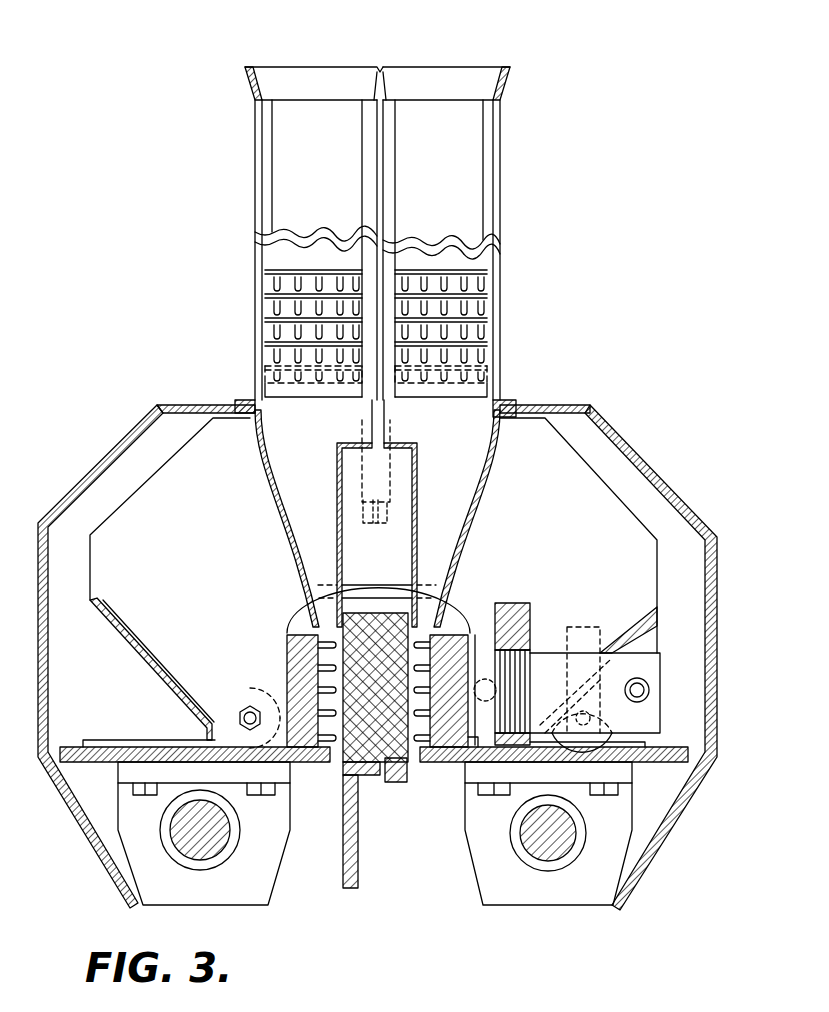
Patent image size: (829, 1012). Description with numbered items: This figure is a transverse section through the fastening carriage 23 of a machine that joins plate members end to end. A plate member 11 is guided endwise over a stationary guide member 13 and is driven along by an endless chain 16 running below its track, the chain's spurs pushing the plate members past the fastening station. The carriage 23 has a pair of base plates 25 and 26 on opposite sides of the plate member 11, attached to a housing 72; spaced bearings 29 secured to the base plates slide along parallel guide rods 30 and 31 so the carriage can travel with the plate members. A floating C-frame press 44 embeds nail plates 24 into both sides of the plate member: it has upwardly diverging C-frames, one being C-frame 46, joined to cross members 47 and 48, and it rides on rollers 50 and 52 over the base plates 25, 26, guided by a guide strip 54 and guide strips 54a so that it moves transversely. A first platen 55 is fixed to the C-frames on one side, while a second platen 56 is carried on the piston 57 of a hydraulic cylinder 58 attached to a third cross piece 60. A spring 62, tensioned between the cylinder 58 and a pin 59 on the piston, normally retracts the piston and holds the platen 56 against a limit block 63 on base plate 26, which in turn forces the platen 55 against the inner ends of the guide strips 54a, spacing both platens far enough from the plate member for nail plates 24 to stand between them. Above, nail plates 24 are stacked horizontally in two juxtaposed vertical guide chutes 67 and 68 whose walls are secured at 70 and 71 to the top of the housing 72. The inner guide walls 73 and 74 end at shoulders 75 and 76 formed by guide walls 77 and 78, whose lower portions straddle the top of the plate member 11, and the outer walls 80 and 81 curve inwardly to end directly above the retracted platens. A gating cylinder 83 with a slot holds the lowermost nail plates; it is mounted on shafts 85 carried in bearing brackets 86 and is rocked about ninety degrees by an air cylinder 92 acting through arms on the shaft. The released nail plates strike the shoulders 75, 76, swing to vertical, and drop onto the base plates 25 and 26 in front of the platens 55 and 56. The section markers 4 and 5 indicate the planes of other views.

The section line 4- 4 is at (397, 8).
The section line 5- 5 is at (673, 530).
The plate member 11 is at (378, 632).
The stationary guide member 13 is at (359, 860).
The endless chain 16 is at (396, 783).
The fastening carriage 23 is at (377, 639).
The nail plates 24 is at (489, 283).
The base plate 25 is at (70, 747).
The base plate 26 is at (662, 765).
The bearings 29 is at (218, 858).
The guide rod 30 is at (183, 842).
The guide rod 31 is at (523, 832).
The floating C-frame press 44 is at (128, 664).
The C-frame 46 is at (152, 486).
The cross member 47 is at (168, 683).
The cross member 48 is at (630, 625).
The roller 50 is at (251, 690).
The roller 52 is at (612, 741).
The guide strip 54 is at (498, 763).
The guide strips 54a is at (140, 741).
The first platen 55 is at (288, 646).
The second platen 56 is at (452, 630).
The piston 57 is at (476, 660).
The hydraulic cylinder 58 is at (661, 678).
The pin 59 is at (525, 677).
The third cross piece 60 is at (511, 612).
The spring 62 is at (568, 636).
The limit block 63 is at (472, 748).
The vertical guide chute 67 is at (485, 66).
The vertical guide chute 68 is at (337, 66).
The wall securing point 70 is at (503, 403).
The wall securing point 71 is at (246, 401).
The housing 72 is at (608, 423).
The inner guide wall 73 is at (386, 412).
The inner guide wall 74 is at (370, 412).
The shoulder 75 is at (413, 444).
The shoulder 76 is at (347, 444).
The guide wall 77 is at (381, 524).
The guide wall 78 is at (350, 493).
The outer wall 80 is at (486, 502).
The outer wall 81 is at (284, 542).
The gating cylinder 83 is at (299, 398).
The shafts 85 is at (497, 343).
The bearing brackets 86 is at (495, 367).
The air cylinder 92 is at (342, 506).